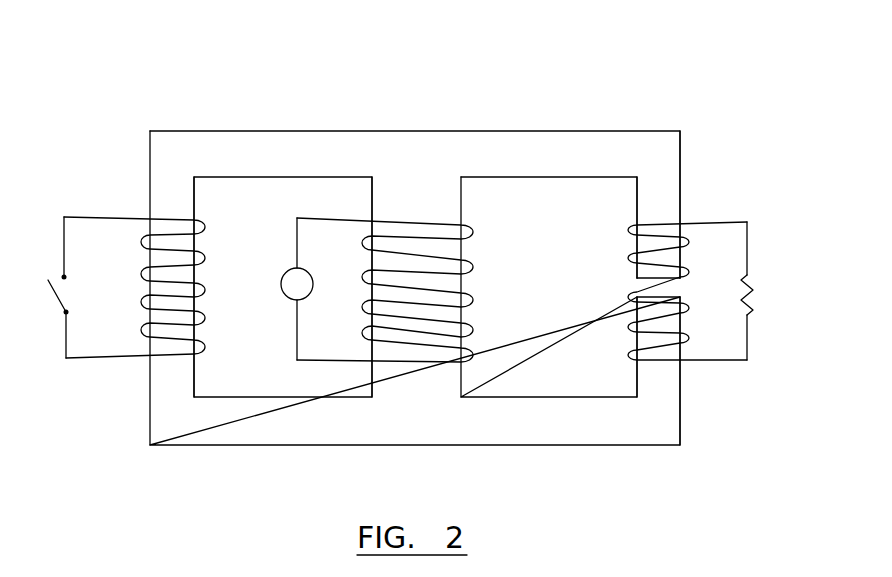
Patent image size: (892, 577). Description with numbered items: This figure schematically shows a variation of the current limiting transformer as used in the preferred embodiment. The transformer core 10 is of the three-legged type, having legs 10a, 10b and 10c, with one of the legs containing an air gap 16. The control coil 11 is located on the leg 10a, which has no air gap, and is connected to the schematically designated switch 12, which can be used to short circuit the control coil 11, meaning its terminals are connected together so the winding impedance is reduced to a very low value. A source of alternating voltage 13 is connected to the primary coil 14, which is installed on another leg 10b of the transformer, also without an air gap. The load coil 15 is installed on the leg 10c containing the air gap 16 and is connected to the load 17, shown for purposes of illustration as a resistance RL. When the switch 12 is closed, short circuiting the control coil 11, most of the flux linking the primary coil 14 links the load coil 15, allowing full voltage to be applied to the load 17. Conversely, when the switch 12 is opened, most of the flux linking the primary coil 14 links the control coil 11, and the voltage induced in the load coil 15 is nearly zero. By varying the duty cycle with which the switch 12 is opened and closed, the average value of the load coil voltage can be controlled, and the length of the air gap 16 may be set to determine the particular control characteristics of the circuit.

The transformer core 10 is at (190, 450).
The leg 10a is at (160, 200).
The leg 10b is at (388, 198).
The leg 10c is at (653, 207).
The control coil 11 is at (143, 338).
The switch 12 is at (66, 294).
The source of alternating voltage 13 is at (281, 301).
The primary coil 14 is at (402, 210).
The load coil 15 is at (667, 214).
The air gap 16 is at (628, 285).
The load 17 is at (757, 318).